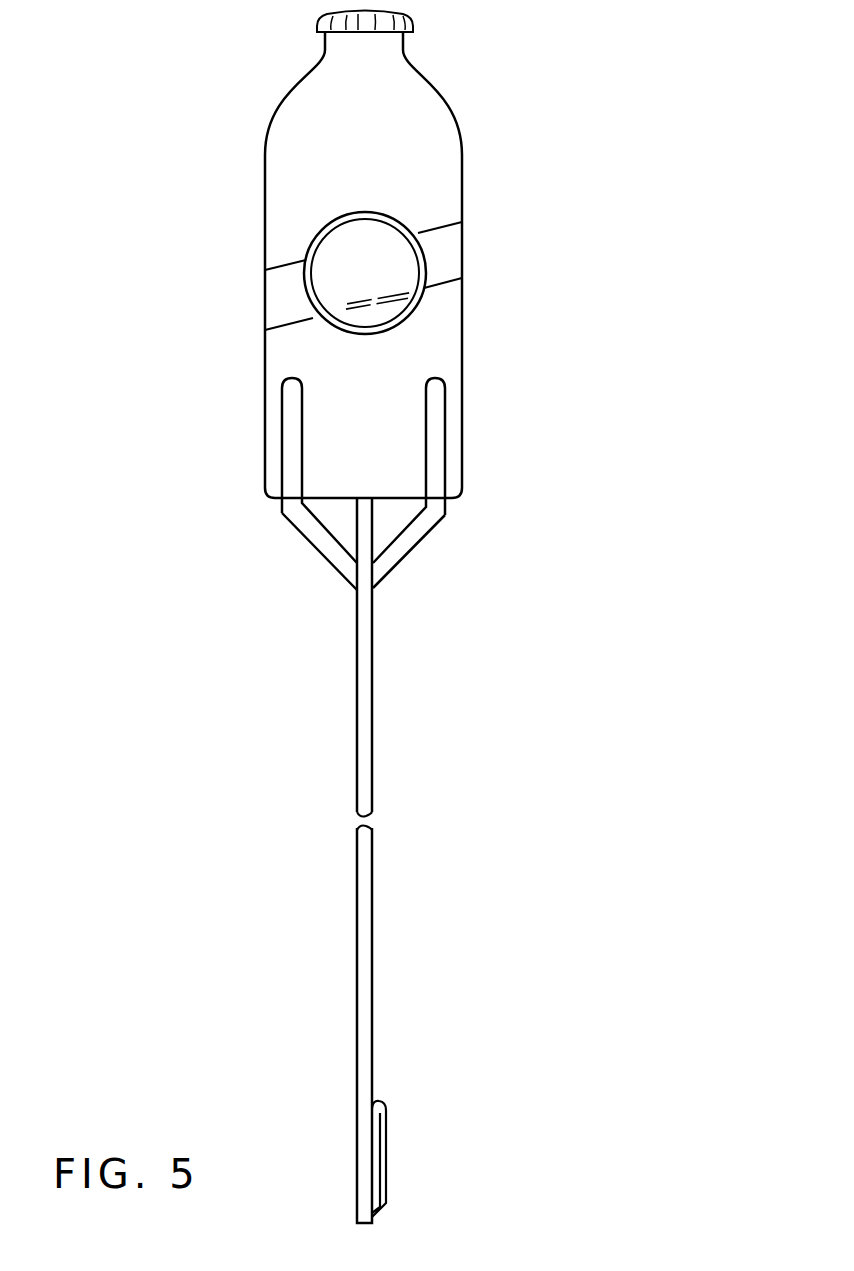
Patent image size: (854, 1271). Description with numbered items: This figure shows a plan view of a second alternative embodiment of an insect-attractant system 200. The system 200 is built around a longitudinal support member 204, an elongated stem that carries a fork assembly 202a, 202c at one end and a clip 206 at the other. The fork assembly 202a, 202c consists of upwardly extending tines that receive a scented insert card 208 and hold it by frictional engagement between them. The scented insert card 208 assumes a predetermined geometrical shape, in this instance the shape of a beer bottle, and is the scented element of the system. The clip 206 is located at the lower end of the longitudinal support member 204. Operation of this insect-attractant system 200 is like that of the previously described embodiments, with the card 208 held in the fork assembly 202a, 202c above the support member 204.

The insect-attractant system 200 is at (540, 250).
The scented insert card 208 is at (413, 130).
The fork assembly 202a is at (290, 453).
The fork assembly 202c is at (433, 442).
The longitudinal support member 204 is at (372, 727).
The clip 206 is at (386, 1147).